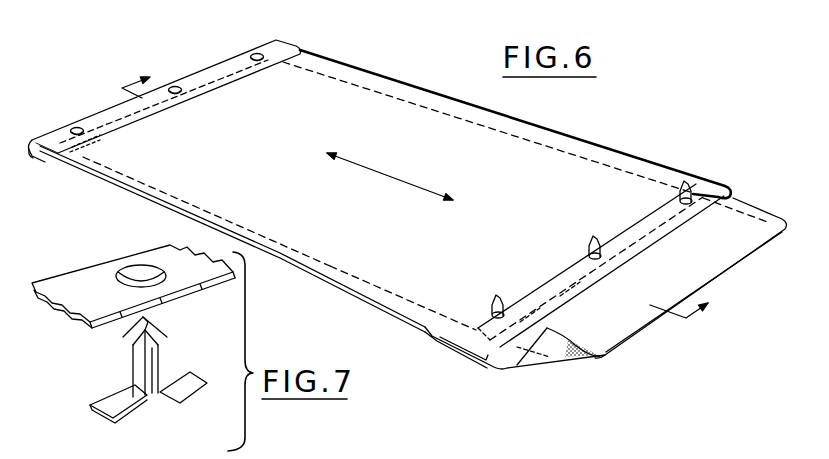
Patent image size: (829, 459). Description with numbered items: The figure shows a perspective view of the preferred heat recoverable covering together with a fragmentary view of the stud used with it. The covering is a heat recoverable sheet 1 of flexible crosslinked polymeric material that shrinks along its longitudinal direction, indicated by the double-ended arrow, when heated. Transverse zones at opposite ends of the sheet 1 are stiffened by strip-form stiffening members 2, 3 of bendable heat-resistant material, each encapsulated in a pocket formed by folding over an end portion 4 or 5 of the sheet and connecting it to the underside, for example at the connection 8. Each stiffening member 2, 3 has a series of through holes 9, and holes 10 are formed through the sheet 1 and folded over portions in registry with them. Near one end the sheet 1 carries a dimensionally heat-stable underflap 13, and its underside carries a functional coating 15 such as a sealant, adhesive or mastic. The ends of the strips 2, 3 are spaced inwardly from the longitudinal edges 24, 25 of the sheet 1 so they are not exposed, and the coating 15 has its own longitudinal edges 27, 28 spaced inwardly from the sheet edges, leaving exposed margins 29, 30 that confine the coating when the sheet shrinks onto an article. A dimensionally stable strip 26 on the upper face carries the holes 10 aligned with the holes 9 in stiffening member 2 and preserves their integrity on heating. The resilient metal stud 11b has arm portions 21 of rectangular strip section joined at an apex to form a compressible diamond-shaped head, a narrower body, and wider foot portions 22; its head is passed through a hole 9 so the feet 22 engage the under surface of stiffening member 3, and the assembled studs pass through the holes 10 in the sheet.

In FIG. 6, the heat recoverable sheet 1 is at (388, 85).
In FIG. 6, the stiffening member 2 is at (97, 128).
In FIG. 6, the stiffening member 3 is at (637, 227).
In FIG. 7, the stiffening member 3 is at (77, 275).
In FIG. 6, the folded over end portion 4 is at (220, 246).
In FIG. 6, the folded over end portion 5 is at (467, 355).
In FIG. 6, the connection 8 is at (403, 205).
In FIG. 6, the through holes 9 is at (86, 128).
In FIG. 7, the through holes 9 is at (120, 272).
In FIG. 6, the holes 10 is at (254, 55).
In FIG. 6, the stud 11b is at (682, 186).
In FIG. 7, the stud 11b is at (128, 380).
In FIG. 6, the underflap 13 is at (737, 215).
In FIG. 6, the functional coating 15 is at (573, 363).
In FIG. 7, the arm portions 21 is at (153, 370).
In FIG. 7, the foot portions 22 is at (183, 396).
In FIG. 6, the longitudinal edge 24 is at (357, 295).
In FIG. 6, the longitudinal edge 25 is at (577, 140).
In FIG. 6, the strip 26 is at (44, 134).
In FIG. 6, the longitudinal edge of functional coating 27 is at (398, 297).
In FIG. 6, the longitudinal edge of functional coating 28 is at (633, 173).
In FIG. 6, the exposed longitudinal margin 29 is at (331, 270).
In FIG. 6, the exposed longitudinal margin 30 is at (600, 155).